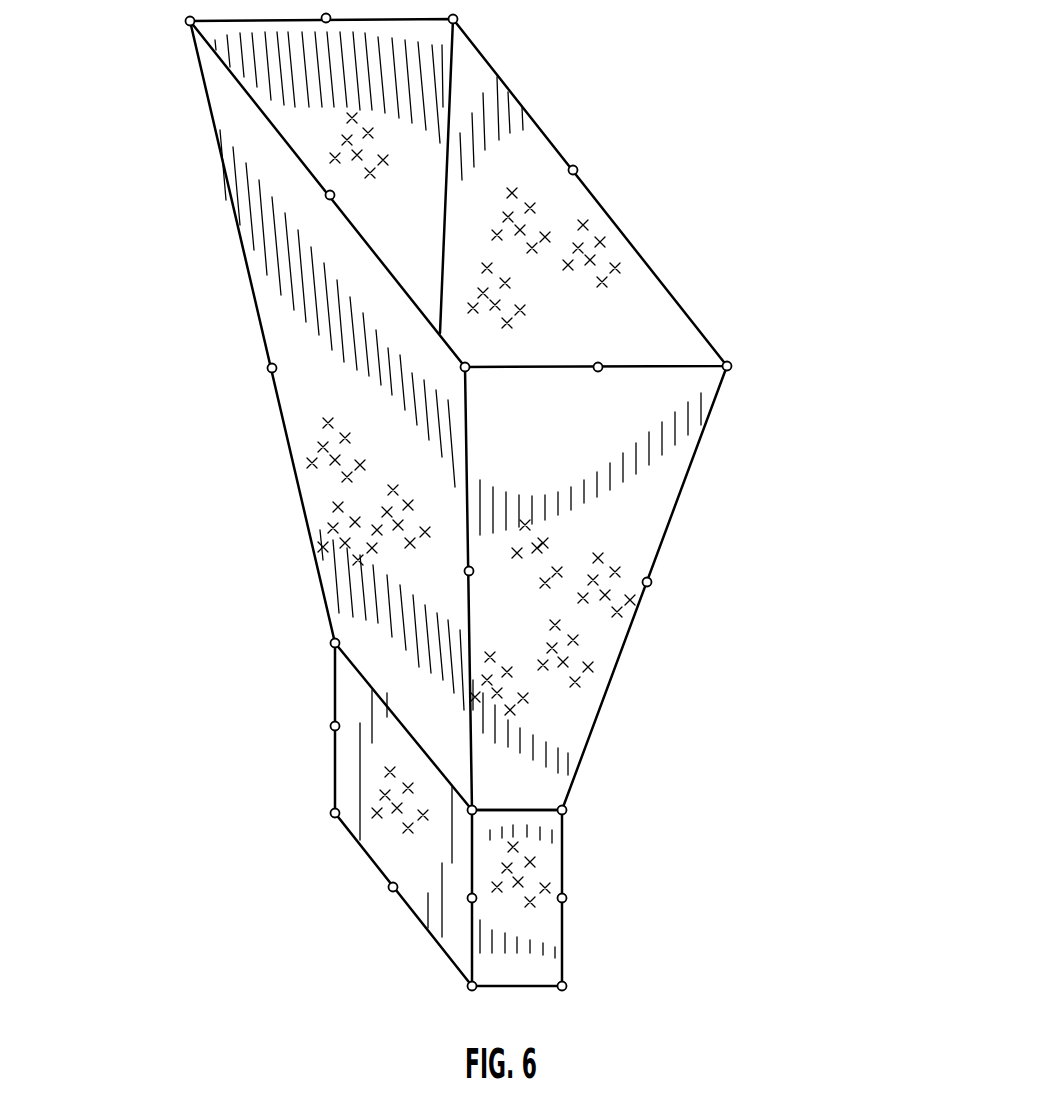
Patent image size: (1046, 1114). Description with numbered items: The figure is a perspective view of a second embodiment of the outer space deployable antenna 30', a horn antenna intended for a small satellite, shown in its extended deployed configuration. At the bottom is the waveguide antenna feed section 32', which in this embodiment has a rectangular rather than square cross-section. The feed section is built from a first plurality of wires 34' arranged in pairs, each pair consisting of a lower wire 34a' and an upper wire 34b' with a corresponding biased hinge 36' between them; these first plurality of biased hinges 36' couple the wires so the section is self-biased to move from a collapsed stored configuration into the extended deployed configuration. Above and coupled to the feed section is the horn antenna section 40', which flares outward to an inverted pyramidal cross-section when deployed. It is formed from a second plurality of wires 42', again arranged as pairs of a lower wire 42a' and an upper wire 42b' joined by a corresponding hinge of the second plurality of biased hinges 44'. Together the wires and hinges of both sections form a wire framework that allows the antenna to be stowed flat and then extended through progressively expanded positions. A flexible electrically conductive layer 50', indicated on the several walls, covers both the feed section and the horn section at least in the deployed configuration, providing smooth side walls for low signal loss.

The outer space deployable antenna 30' is at (461, 498).
The waveguide antenna feed section 32' is at (604, 898).
The first plurality of wires 34' is at (475, 814).
The lower wire 34a' is at (339, 854).
The upper wire 34b' is at (345, 726).
The first plurality of biased hinges 36' is at (397, 930).
The horn antenna section 40' is at (678, 287).
The second plurality of wires 42' is at (246, 414).
The lower wire 42a' is at (329, 415).
The upper wire 42b' is at (298, 176).
The second plurality of biased hinges 44' is at (615, 588).
The flexible electrically conductive layer 50' is at (538, 510).